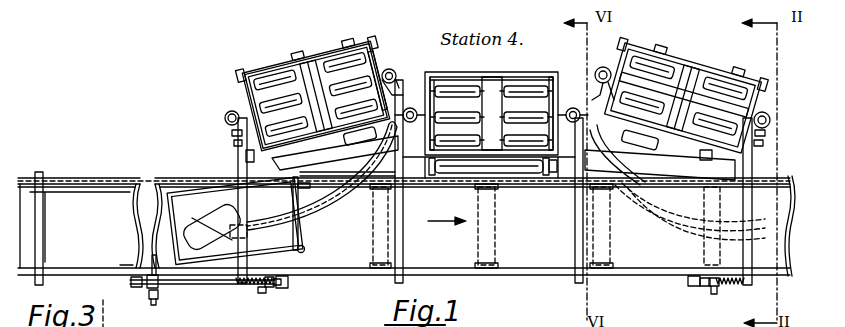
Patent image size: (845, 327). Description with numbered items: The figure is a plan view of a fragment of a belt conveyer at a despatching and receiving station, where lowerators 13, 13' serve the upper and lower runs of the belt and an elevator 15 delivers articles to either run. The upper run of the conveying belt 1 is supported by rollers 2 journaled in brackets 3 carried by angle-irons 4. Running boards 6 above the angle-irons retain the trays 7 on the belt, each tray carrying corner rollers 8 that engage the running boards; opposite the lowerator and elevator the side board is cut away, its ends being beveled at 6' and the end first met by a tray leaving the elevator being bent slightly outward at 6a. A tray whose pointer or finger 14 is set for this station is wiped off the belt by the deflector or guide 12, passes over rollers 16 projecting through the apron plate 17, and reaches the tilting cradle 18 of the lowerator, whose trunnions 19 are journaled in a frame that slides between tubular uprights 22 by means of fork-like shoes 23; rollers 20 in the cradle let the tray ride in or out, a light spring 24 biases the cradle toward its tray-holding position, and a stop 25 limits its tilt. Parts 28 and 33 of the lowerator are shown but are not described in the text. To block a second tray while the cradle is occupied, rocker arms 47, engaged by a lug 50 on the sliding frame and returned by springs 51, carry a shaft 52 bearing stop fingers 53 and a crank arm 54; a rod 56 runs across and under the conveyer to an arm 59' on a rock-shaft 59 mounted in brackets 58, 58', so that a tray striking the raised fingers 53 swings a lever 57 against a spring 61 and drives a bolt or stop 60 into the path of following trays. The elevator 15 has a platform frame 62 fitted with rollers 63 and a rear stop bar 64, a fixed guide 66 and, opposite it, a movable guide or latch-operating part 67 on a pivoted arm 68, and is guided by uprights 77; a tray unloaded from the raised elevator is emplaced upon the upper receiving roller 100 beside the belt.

The upper run of the conveying belt 1 is at (548, 258).
The rollers 2 is at (372, 222).
The brackets 3 is at (383, 268).
The angle-irons 4 is at (36, 175).
The running boards 6 is at (404, 224).
The beveled ends of the side board 6' is at (305, 168).
The outwardly bent end of the side board 6a is at (640, 200).
The trays 7 is at (168, 243).
The rollers 8 is at (305, 250).
The deflector or guide 12 is at (292, 222).
The lowerator 13 is at (300, 96).
The second tilting roller carriage 13' is at (683, 98).
The pointer or finger 14 is at (298, 212).
The elevator 15 is at (480, 72).
The rollers 16 is at (345, 143).
The plate 17 is at (380, 170).
The tilting table or cradle 18 is at (308, 62).
The trunnions 19 is at (380, 70).
The rollers 20 is at (260, 68).
The uprights 22 is at (224, 118).
The fork-like shoes 23 is at (395, 74).
The light spring 24 is at (375, 44).
The stop 25 is at (239, 72).
The top lug 28 is at (296, 49).
The roller 33 is at (372, 133).
The rocker arms 47 is at (240, 146).
The lug 50 is at (234, 134).
The spring 51 is at (236, 144).
The shaft 52 is at (246, 160).
The fingers or levers 53 is at (640, 146).
The crank arm 54 is at (712, 160).
The link or rod 56 is at (264, 290).
The lever 57 is at (153, 300).
The bracket 58 is at (488, 299).
The bracket 58' is at (127, 295).
The rock-shaft 59 is at (202, 292).
The arm 59' is at (266, 292).
The bolt or stop 60 is at (158, 284).
The spring 61 is at (256, 284).
The frame 62 is at (515, 75).
The rollers 63 is at (508, 115).
The bar 64 is at (460, 76).
The guide 66 is at (433, 80).
The movable guide or latch operating part 67 is at (549, 75).
The arm or lever 68 is at (549, 168).
The uprights 77 is at (411, 107).
The upper receiving roller 100 is at (470, 170).